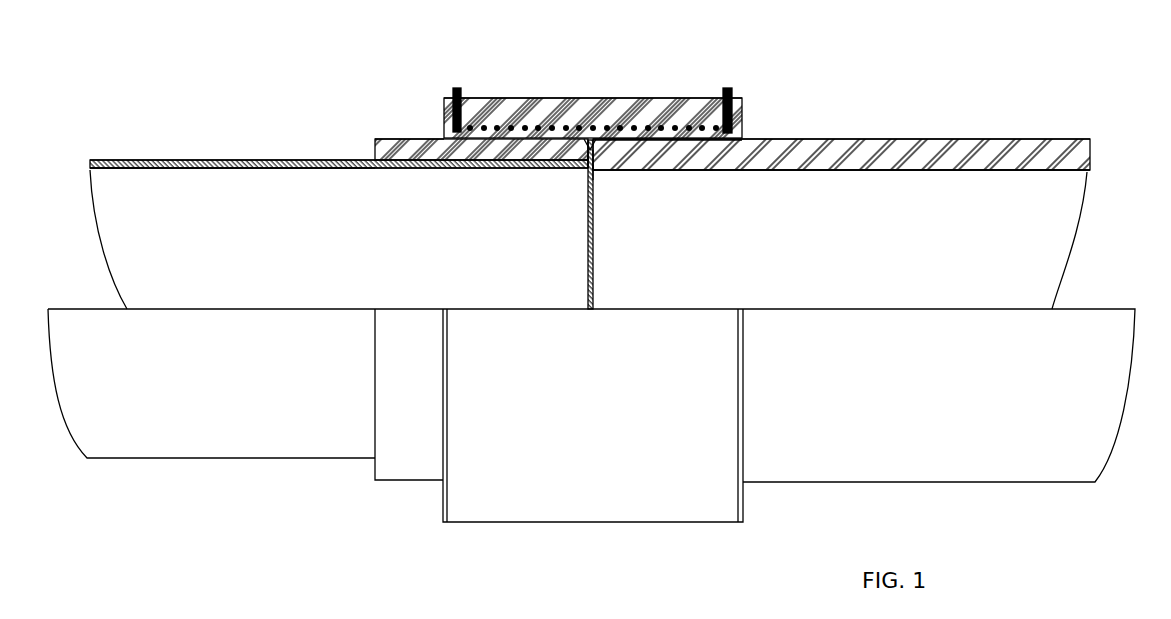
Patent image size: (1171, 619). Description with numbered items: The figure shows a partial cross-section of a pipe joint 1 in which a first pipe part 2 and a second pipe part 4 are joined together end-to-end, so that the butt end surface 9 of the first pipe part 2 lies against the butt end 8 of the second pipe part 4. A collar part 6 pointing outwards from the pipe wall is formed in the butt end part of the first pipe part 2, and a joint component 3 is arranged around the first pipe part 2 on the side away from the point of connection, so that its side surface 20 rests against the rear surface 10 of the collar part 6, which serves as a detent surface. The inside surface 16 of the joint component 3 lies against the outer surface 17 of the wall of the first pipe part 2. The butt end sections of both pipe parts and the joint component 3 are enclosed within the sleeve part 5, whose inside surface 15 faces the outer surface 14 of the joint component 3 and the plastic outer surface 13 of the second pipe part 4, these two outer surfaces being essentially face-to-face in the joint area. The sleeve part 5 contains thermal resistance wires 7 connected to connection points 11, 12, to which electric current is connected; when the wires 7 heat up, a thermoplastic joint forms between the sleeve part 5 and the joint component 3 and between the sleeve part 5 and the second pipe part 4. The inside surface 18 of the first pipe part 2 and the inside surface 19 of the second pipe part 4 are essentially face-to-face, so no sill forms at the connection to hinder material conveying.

The pipe joint 1 is at (430, 41).
The first pipe part 2 is at (223, 165).
The joint component 3 is at (388, 150).
The second pipe part 4 is at (860, 152).
The sleeve part 5 is at (643, 107).
The collar part 6 is at (585, 147).
The thermal resistance wires 7 is at (586, 138).
The butt end of second pipe part 8 is at (593, 163).
The butt end surface of first pipe part 9 is at (597, 173).
The rear surface of collar 10 is at (583, 150).
The connection point 11 is at (728, 88).
The connection point 12 is at (460, 88).
The outer surface of second pipe part 13 is at (772, 139).
The outer surface of joint component 14 is at (392, 139).
The inside surface of sleeve part 15 is at (672, 138).
The inside surface of joint component 16 is at (403, 162).
The outer surface of first pipe part wall 17 is at (270, 160).
The inside surface of first pipe part 18 is at (280, 168).
The inside surface of second pipe part 19 is at (803, 170).
The side surface of joint component 20 is at (583, 150).